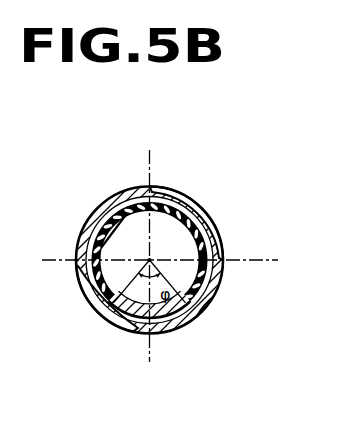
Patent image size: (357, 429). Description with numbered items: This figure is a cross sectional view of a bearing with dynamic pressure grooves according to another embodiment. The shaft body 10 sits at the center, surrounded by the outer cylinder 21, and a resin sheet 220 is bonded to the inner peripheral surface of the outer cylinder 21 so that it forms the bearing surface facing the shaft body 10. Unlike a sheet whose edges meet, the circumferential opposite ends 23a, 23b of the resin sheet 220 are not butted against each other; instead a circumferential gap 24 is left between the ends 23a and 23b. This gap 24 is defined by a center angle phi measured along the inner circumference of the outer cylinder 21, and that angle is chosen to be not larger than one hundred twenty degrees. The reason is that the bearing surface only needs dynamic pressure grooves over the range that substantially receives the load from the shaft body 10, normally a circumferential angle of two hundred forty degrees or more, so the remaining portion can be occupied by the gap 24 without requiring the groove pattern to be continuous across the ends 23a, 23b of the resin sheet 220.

The shaft body 10 is at (107, 207).
The outer cylinder 21 is at (193, 209).
The resin sheet 220 is at (210, 293).
The circumferential end of resin sheet 23a is at (110, 313).
The circumferential end of resin sheet 23b is at (194, 308).
The circumferential gap 24 is at (162, 312).